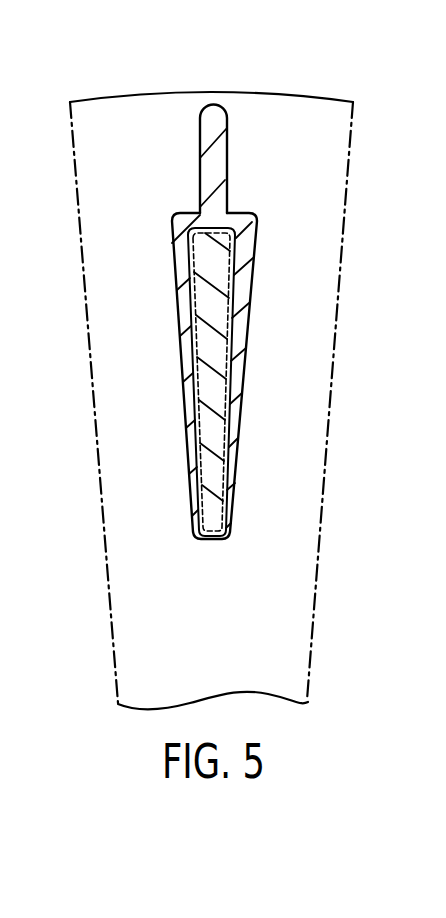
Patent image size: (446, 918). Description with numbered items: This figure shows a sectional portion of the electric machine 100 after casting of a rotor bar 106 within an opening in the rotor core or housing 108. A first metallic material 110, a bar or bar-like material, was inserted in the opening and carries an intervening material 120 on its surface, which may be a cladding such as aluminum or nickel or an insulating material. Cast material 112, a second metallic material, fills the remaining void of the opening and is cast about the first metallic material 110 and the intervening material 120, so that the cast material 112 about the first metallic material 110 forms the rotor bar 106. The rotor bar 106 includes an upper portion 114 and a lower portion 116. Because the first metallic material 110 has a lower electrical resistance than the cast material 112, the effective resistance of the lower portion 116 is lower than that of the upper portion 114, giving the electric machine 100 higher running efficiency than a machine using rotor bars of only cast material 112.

The electric machine 100 is at (338, 493).
The rotor bar 106 is at (285, 135).
The rotor core or housing 108 is at (246, 662).
The first metallic material 110 is at (210, 430).
The cast material 112 is at (253, 268).
The upper portion 114 is at (188, 175).
The lower portion 116 is at (250, 349).
The intervening material 120 is at (190, 258).